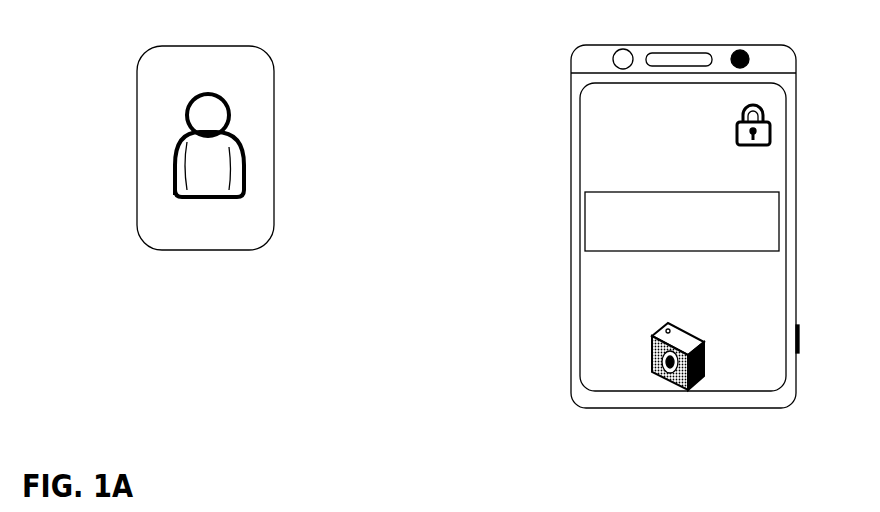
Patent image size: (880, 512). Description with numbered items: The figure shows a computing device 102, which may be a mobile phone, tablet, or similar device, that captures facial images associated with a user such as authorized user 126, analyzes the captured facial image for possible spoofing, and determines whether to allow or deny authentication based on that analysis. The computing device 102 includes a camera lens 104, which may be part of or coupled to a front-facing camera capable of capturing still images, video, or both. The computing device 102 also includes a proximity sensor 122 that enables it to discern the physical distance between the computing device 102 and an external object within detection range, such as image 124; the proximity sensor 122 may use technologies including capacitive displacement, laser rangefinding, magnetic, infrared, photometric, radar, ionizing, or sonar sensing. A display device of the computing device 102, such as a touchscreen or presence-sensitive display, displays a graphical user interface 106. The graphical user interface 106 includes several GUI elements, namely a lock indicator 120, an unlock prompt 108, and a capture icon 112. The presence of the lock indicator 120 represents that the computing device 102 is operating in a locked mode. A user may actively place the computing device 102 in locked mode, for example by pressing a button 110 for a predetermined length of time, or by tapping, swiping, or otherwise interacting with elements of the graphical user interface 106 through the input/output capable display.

The computing device 102 is at (577, 50).
The camera lens 104 is at (747, 51).
The graphical user interface 106 is at (581, 148).
The unlock prompt 108 is at (778, 193).
The button 110 is at (798, 347).
The capture icon 112 is at (650, 335).
The lock indicator 120 is at (770, 120).
The proximity sensor 122 is at (619, 50).
The image 124 is at (139, 92).
The authorized user 126 is at (173, 165).